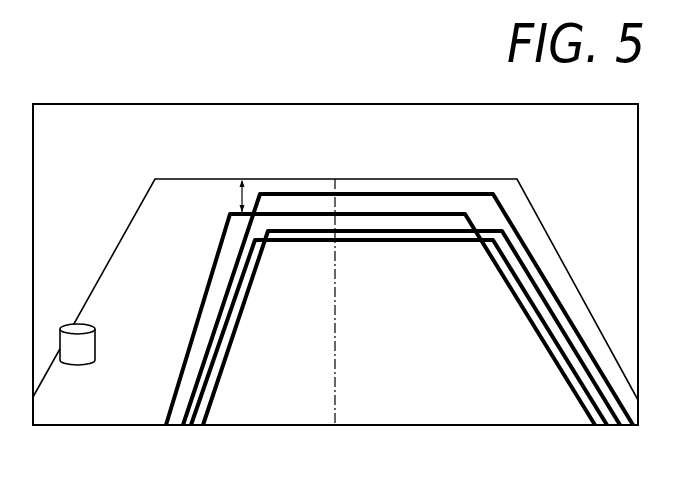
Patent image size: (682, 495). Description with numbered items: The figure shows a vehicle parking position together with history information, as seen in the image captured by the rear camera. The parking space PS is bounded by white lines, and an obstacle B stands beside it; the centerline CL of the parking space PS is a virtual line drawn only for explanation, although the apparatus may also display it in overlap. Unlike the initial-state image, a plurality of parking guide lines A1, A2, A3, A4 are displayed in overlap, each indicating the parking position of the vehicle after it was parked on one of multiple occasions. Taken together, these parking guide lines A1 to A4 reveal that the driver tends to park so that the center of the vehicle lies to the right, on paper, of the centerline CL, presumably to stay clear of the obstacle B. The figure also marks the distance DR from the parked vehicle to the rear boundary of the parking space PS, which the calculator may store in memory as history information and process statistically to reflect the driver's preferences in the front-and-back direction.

The parking space PS is at (138, 210).
The centerline CL is at (335, 302).
The parking guide line A1 is at (437, 191).
The parking guide line A2 is at (491, 229).
The parking guide line A3 is at (373, 211).
The parking guide line A4 is at (388, 243).
The distance to the rear boundary DR is at (230, 196).
The obstacle B is at (75, 325).